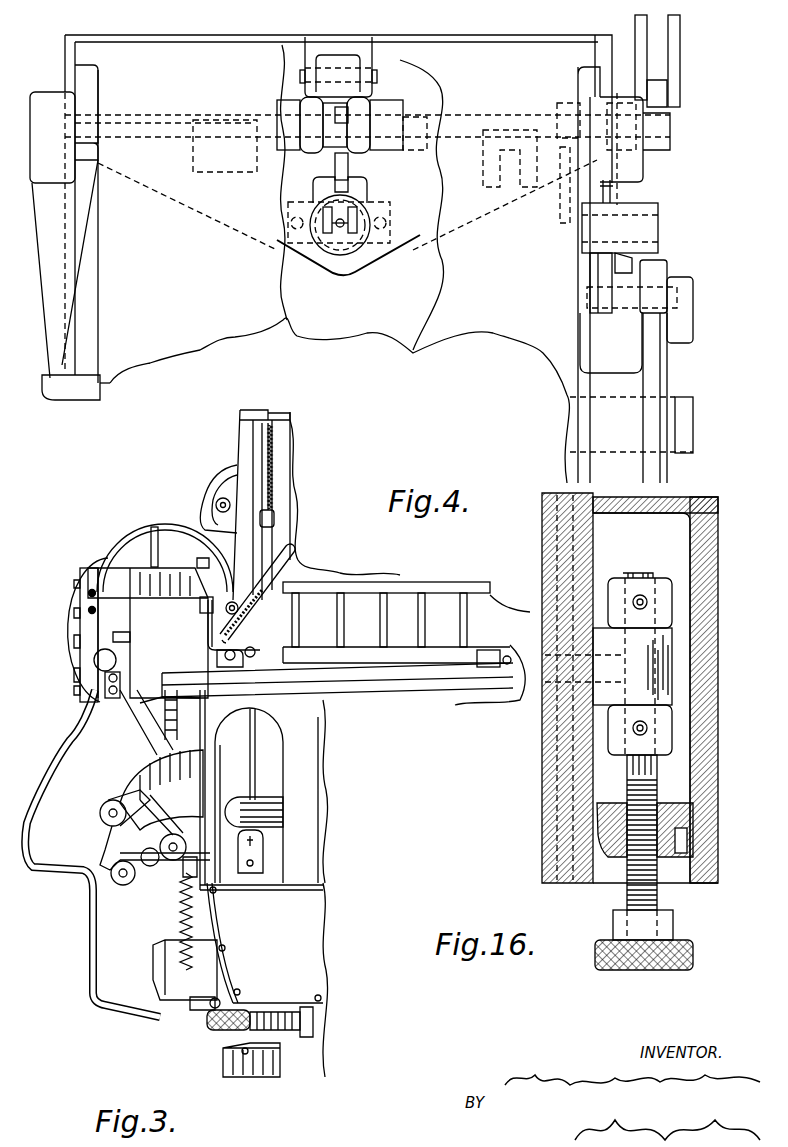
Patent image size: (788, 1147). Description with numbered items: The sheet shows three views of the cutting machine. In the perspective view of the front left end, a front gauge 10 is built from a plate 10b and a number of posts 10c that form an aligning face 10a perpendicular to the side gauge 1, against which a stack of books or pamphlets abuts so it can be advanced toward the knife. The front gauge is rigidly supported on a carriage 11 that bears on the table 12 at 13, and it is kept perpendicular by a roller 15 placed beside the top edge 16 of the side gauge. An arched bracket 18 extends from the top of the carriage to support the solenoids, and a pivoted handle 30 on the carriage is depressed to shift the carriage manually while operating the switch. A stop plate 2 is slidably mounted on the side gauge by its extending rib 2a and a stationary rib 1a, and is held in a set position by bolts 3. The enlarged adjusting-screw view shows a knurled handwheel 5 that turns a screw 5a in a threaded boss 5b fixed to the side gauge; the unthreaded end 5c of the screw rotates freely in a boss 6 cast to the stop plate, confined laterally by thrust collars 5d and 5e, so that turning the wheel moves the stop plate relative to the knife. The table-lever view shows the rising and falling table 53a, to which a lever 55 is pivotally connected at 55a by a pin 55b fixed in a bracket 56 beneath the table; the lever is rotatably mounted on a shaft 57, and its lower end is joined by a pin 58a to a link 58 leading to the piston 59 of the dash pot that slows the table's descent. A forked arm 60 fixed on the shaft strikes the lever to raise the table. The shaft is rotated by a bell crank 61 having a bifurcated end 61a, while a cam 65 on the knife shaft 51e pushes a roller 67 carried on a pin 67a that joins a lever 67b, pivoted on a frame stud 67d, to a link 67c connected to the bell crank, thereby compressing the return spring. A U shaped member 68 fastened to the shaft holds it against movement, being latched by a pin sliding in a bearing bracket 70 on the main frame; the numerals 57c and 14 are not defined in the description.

In FIG. 4, the rising and falling table 53a is at (350, 36).
In FIG. 4, the bracket 56 is at (307, 53).
In FIG. 4, the pivot connection 55a is at (368, 60).
In FIG. 4, the lever 55 is at (352, 80).
In FIG. 4, the pin 55b is at (378, 80).
In FIG. 4, the shaft 57 is at (410, 120).
In FIG. 4, the forked arm 60 is at (340, 133).
In FIG. 4, the roller bracket 57c is at (367, 185).
In FIG. 4, the bearing bracket 70 is at (475, 175).
In FIG. 4, the U shaped member 68 is at (562, 195).
In FIG. 4, the piston 59 is at (413, 257).
In FIG. 4, the pin 58a is at (317, 247).
In FIG. 4, the link 58 is at (343, 233).
In FIG. 4, the bifurcated end 61a is at (668, 53).
In FIG. 4, the bell crank 61 is at (665, 128).
In FIG. 4, the cam 65 is at (660, 360).
In FIG. 4, the stud 67d is at (643, 217).
In FIG. 4, the lever 67b is at (632, 263).
In FIG. 4, the link 67c is at (590, 262).
In FIG. 4, the roller 67 is at (655, 270).
In FIG. 4, the pin 67a is at (694, 283).
In FIG. 4, the shaft 51e is at (687, 410).
In FIG. 16, the stop plate 2 is at (548, 767).
In FIG. 3, the stop plate 2 is at (110, 580).
In FIG. 16, the side gauge 1 is at (707, 687).
In FIG. 3, the side gauge 1 is at (147, 622).
In FIG. 16, the thrust collar 5d is at (665, 593).
In FIG. 16, the boss 6 is at (675, 630).
In FIG. 16, the unthreaded end 5c is at (678, 648).
In FIG. 16, the thrust collar 5e is at (667, 733).
In FIG. 16, the screw 5a is at (655, 775).
In FIG. 16, the threaded boss 5b is at (688, 813).
In FIG. 16, the knurled handwheel 5 is at (600, 968).
In FIG. 3, the knurled handwheel 5 is at (100, 673).
In FIG. 3, the bracket 18 is at (153, 522).
In FIG. 3, the top edge 16 is at (97, 600).
In FIG. 3, the bolts 3 is at (90, 600).
In FIG. 3, the extending rib 2a is at (110, 635).
In FIG. 3, the stationary rib 1a is at (94, 660).
In FIG. 3, the roller 15 is at (203, 603).
In FIG. 3, the bracket 14 is at (207, 647).
In FIG. 3, the pivoted handle 30 is at (267, 590).
In FIG. 3, the carriage 11 is at (257, 647).
In FIG. 3, the bearing point 13 is at (220, 668).
In FIG. 3, the front gauge 10 is at (347, 665).
In FIG. 3, the table 12 is at (233, 675).
In FIG. 3, the plate 10b is at (427, 670).
In FIG. 3, the aligning face 10a is at (422, 627).
In FIG. 3, the posts 10c is at (295, 650).